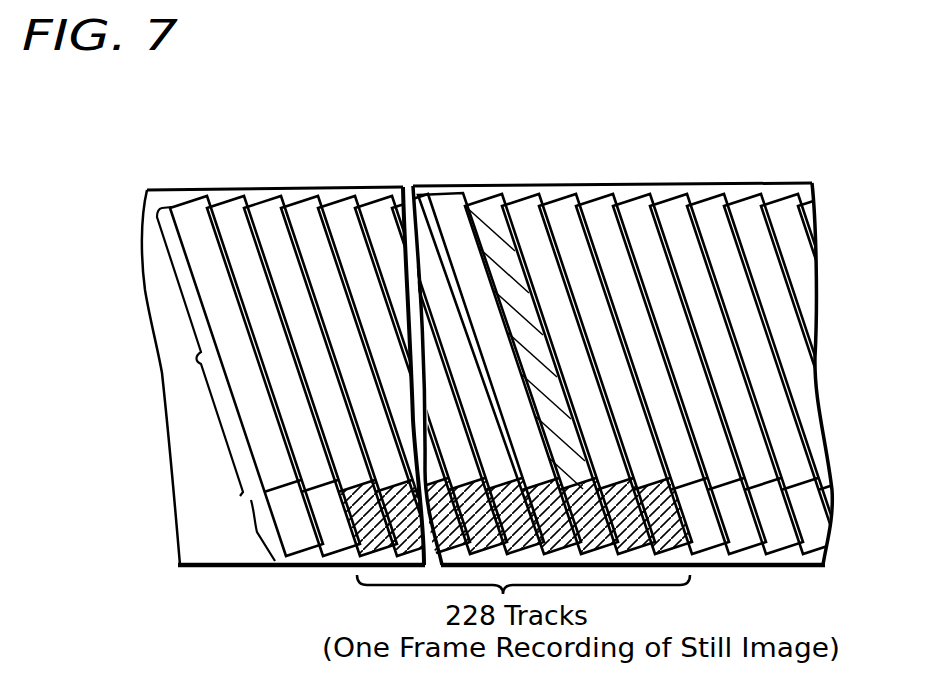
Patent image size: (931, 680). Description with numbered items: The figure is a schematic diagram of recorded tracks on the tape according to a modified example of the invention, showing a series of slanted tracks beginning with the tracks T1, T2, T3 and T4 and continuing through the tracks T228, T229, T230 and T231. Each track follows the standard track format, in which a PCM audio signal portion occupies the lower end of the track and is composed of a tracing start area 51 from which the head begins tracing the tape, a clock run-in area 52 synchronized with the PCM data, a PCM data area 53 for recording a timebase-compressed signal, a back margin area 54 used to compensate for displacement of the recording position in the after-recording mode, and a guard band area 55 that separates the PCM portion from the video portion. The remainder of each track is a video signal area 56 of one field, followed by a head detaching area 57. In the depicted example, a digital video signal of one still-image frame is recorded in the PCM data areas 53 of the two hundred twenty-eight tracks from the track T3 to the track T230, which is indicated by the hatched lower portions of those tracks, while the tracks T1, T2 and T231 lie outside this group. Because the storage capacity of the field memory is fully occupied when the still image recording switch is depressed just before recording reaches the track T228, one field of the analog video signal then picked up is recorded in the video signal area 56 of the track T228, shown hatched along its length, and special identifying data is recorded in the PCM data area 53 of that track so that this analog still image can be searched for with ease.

The track T1 is at (180, 212).
The track T2 is at (225, 212).
The track T3 is at (263, 210).
The track T4 is at (303, 210).
The track T228 is at (483, 212).
The track T229 is at (522, 210).
The track T230 is at (557, 210).
The track T231 is at (603, 210).
The tracing start area 51 is at (242, 572).
The clock run-in area 52 is at (242, 572).
The PCM data area 53 is at (242, 572).
The back margin area 54 is at (242, 572).
The guard band area 55 is at (250, 538).
The video signal area 56 is at (145, 351).
The head detaching area 57 is at (197, 358).